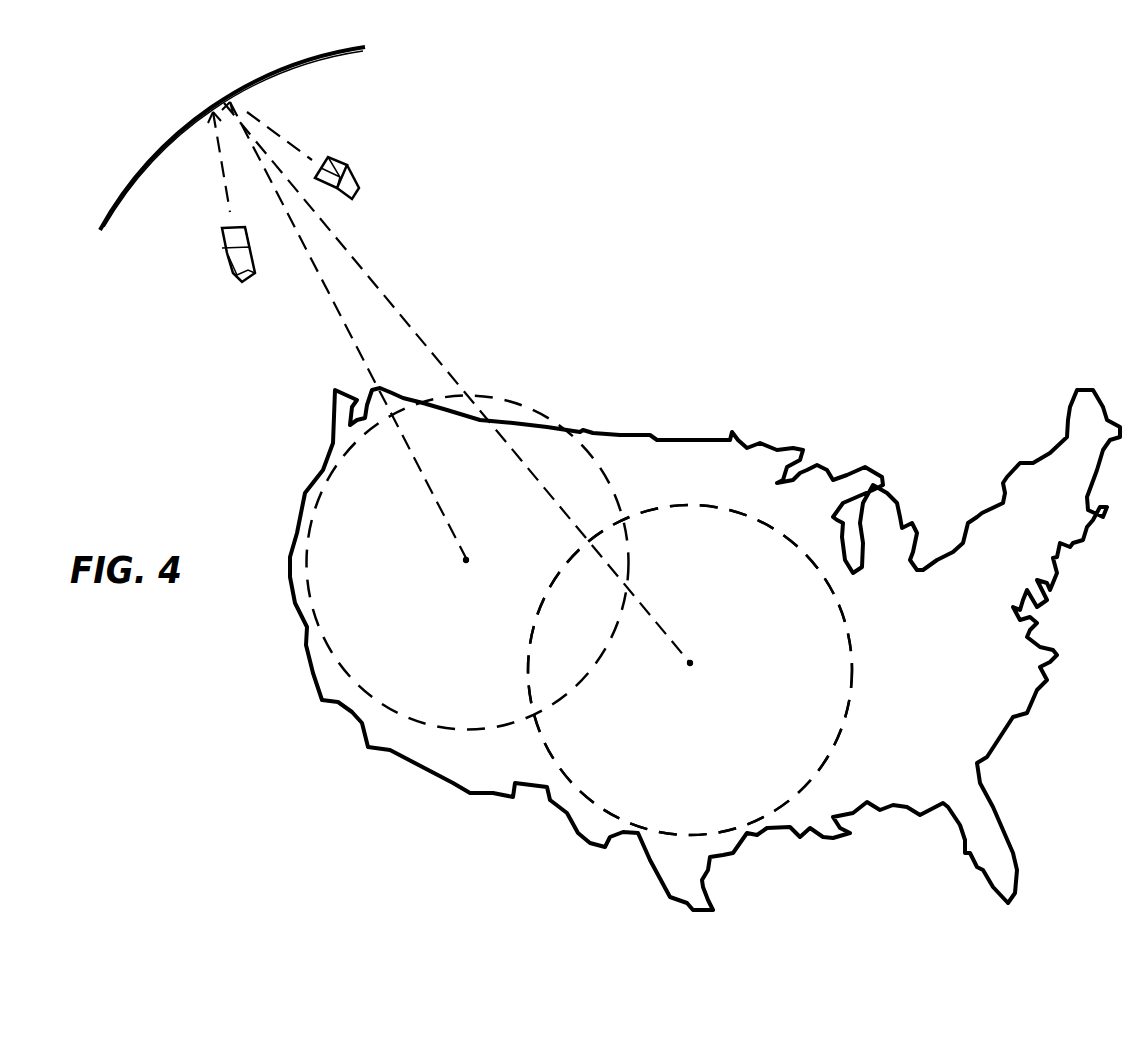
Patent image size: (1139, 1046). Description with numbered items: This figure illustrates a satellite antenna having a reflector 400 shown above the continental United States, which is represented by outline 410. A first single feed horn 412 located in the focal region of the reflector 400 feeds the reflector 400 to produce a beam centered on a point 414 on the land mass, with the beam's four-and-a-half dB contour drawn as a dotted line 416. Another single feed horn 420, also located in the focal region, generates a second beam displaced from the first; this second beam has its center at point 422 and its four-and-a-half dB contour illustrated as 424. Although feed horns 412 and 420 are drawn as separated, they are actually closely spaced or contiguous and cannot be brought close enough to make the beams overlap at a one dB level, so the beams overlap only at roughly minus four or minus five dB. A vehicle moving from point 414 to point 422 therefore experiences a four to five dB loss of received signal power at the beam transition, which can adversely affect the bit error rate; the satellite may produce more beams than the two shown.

The reflector 400 is at (327, 54).
The outline 410 is at (707, 430).
The first single feed horn 412 is at (378, 175).
The point 414 is at (466, 560).
The dotted line 416 is at (316, 515).
The single feed horn 420 is at (227, 253).
The point 422 is at (690, 663).
The contour 424 is at (707, 507).